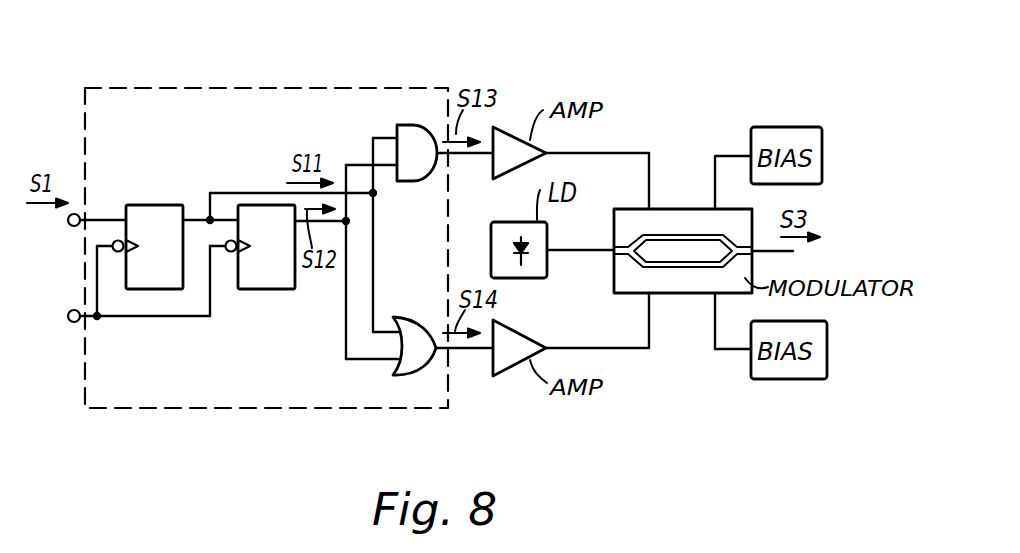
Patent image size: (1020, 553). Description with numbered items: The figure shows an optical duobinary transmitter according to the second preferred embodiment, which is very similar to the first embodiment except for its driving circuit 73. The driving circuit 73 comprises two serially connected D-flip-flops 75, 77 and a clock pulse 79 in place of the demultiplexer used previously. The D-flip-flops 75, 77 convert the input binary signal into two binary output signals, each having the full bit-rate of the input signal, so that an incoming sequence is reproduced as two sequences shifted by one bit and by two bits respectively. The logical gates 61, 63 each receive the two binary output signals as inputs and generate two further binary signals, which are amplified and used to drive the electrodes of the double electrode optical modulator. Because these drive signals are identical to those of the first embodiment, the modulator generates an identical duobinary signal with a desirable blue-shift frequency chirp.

The logical gate 61 is at (412, 125).
The logical gate 63 is at (408, 375).
The driving circuit 73 is at (122, 86).
The D-flip-flop 75 is at (142, 204).
The D-flip-flop 77 is at (265, 290).
The clock pulse 79 is at (60, 303).